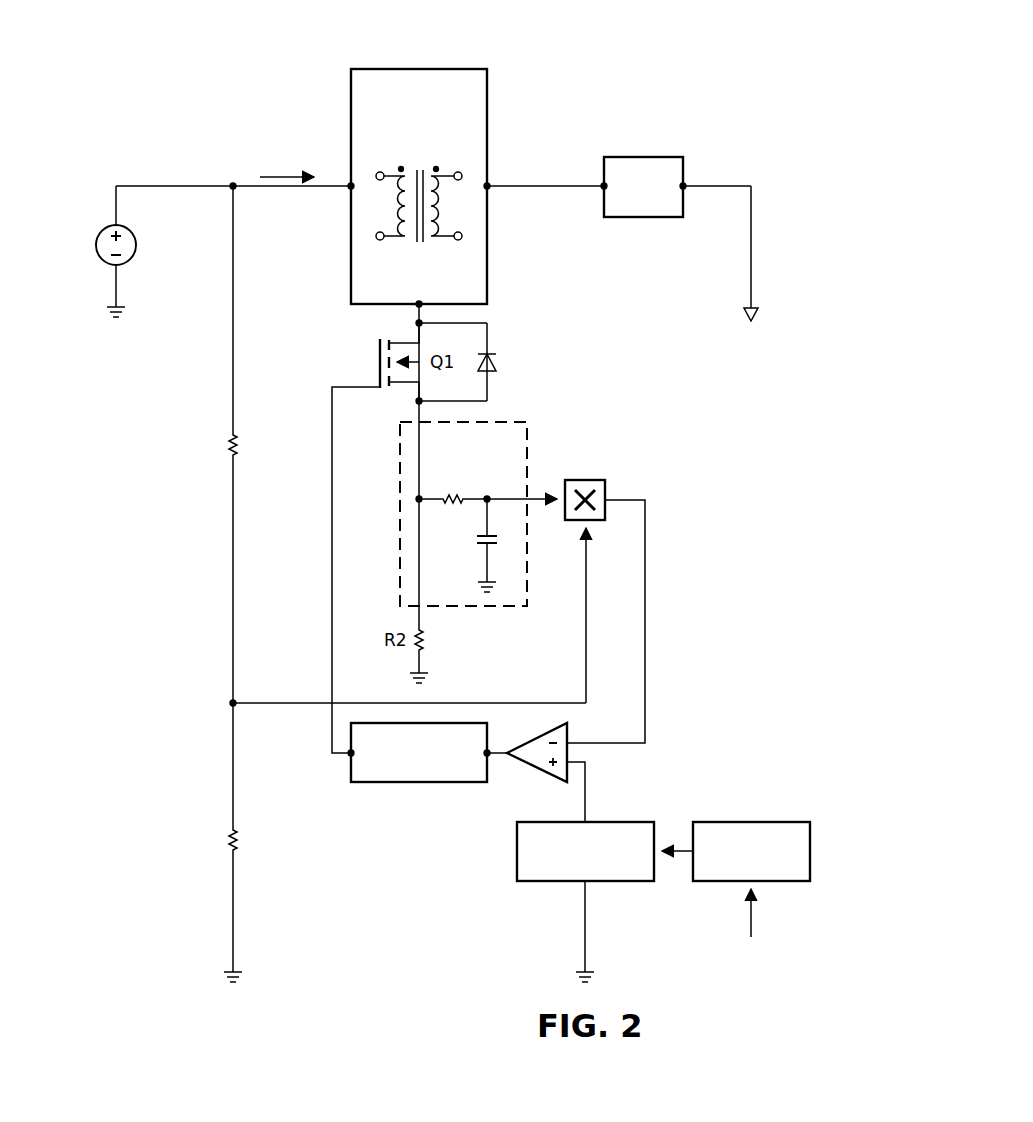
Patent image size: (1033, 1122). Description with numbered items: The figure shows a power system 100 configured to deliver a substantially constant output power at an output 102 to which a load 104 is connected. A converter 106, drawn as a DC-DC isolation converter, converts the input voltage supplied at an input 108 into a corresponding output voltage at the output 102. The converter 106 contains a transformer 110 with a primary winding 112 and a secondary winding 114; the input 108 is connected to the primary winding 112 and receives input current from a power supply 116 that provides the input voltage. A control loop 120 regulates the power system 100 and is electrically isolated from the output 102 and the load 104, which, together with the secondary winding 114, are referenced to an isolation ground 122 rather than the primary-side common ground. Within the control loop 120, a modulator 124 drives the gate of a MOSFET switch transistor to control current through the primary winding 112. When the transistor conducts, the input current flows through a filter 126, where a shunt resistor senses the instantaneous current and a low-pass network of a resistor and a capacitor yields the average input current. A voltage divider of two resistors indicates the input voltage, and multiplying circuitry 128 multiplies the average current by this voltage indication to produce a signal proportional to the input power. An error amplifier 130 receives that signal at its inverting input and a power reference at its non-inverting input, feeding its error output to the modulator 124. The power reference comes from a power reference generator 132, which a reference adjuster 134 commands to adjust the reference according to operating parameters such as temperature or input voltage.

The power system 100 is at (173, 98).
The output 102 is at (546, 188).
The load 104 is at (647, 156).
The converter 106 is at (439, 158).
The input 108 is at (300, 188).
The transformer 110 is at (417, 196).
The primary winding 112 is at (379, 246).
The secondary winding 114 is at (458, 246).
The power supply 116 is at (100, 228).
The control loop 120 is at (454, 609).
The isolation ground 122 is at (758, 312).
The modulator 124 is at (420, 783).
The filter 126 is at (472, 612).
The multiplying circuitry 128 is at (607, 490).
The error amplifier 130 is at (532, 765).
The power reference generator 132 is at (614, 881).
The reference adjuster 134 is at (782, 881).